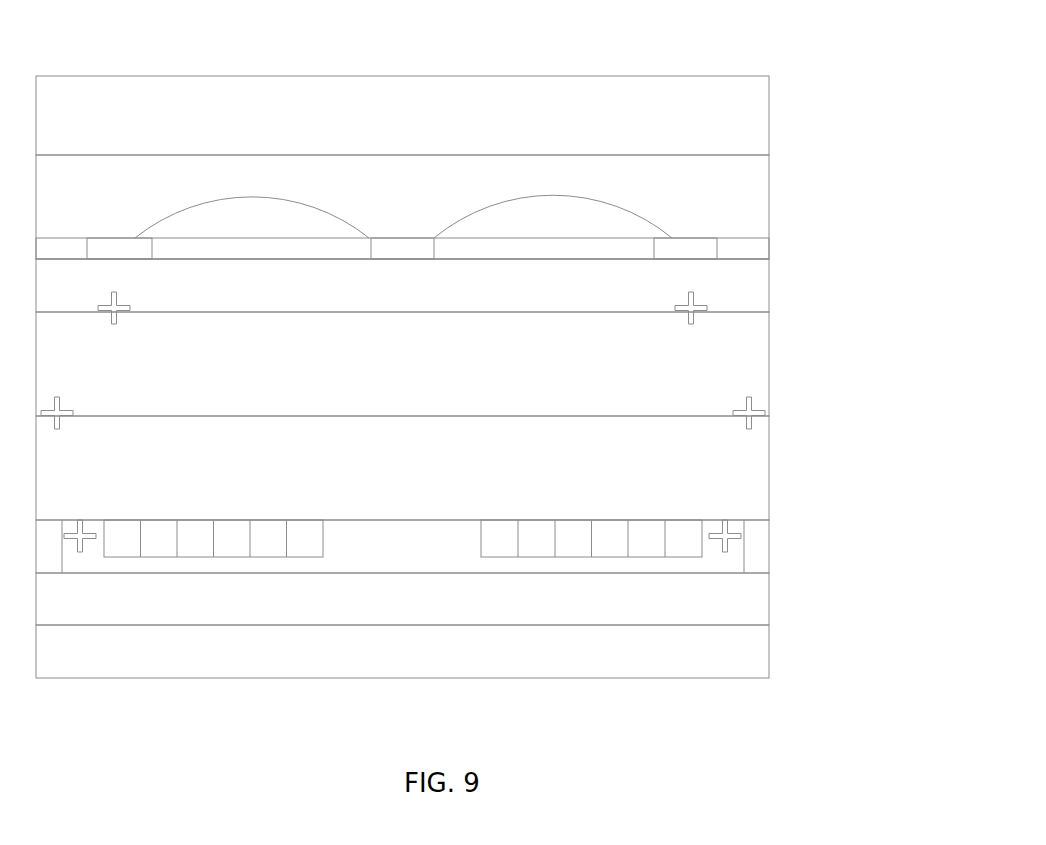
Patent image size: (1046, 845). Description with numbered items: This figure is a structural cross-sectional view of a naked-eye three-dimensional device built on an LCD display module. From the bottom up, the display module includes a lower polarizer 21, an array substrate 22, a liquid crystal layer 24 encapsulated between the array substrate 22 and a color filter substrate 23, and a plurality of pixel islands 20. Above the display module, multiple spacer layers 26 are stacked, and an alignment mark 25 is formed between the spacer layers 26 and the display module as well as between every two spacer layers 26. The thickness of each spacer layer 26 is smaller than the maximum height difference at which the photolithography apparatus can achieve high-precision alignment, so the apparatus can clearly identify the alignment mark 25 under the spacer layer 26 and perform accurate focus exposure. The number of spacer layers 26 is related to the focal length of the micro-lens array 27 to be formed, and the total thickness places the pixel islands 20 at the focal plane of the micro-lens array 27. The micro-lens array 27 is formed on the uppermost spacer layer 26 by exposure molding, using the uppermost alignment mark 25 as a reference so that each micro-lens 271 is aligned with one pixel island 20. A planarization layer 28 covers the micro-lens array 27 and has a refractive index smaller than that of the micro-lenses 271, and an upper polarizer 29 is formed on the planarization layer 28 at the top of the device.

The pixel islands 20 is at (689, 529).
The lower polarizer 21 is at (728, 662).
The array substrate 22 is at (718, 604).
The color filter substrate 23 is at (689, 474).
The liquid crystal layer 24 is at (726, 561).
The alignment mark 25 is at (690, 315).
The spacer layer 26 is at (727, 280).
The micro-lens array 27 is at (633, 240).
The micro-lens 271 is at (222, 234).
The planarization layer 28 is at (752, 245).
The upper polarizer 29 is at (755, 128).